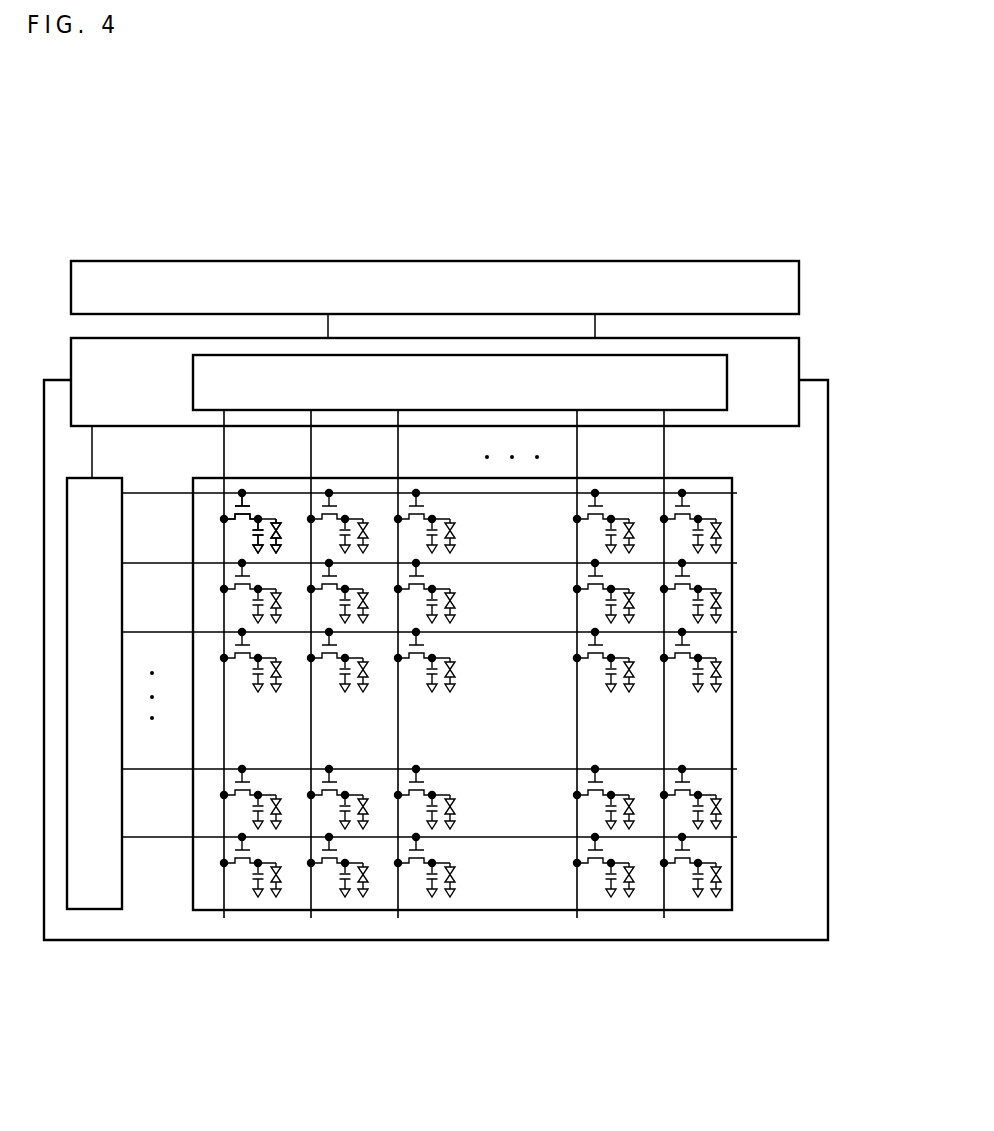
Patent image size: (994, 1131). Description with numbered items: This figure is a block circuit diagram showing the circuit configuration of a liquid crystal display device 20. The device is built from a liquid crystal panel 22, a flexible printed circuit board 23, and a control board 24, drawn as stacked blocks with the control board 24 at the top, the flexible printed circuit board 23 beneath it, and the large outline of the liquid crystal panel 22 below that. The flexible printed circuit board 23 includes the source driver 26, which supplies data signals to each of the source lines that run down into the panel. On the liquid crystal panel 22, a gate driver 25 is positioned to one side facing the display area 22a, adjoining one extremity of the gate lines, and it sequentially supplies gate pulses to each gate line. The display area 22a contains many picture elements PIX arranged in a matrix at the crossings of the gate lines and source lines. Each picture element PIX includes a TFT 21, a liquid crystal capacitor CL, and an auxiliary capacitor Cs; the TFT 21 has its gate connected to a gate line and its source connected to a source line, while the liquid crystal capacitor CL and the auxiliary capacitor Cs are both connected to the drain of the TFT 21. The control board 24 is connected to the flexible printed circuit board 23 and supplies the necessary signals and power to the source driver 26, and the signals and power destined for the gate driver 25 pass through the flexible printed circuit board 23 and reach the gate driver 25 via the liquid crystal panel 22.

The liquid crystal display device 20 is at (601, 141).
The TFT 21 is at (235, 505).
The liquid crystal panel 22 is at (829, 650).
The display area 22a is at (717, 478).
The flexible printed circuit board 23 is at (799, 358).
The control board 24 is at (799, 292).
The gate driver 25 is at (66, 698).
The source driver 26 is at (727, 388).
The picture element PIX is at (271, 499).
The liquid crystal capacitor CL is at (281, 530).
The auxiliary capacitor Cs is at (255, 538).